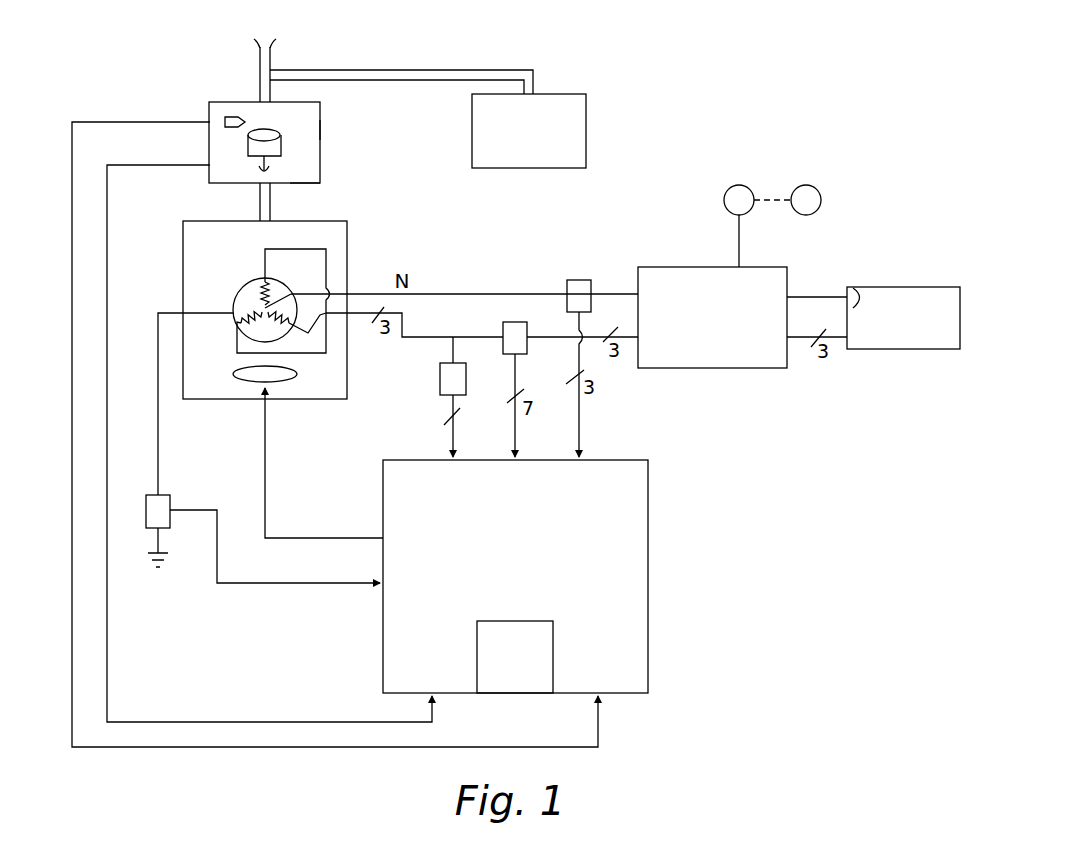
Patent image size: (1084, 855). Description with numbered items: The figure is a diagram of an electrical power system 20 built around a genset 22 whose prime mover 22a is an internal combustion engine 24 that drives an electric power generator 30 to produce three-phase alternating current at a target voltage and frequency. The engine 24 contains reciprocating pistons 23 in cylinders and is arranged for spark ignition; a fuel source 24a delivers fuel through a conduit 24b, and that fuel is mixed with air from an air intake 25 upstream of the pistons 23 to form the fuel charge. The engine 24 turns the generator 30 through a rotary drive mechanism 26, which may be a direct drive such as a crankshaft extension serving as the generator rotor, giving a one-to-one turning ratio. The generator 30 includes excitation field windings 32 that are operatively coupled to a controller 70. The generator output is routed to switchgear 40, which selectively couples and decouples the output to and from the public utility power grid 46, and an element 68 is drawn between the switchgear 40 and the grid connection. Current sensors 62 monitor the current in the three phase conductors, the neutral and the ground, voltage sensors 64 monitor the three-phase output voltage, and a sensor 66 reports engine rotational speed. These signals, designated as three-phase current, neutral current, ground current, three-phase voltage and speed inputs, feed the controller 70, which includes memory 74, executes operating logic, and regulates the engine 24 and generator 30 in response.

The electrical power system 20 is at (87, 98).
The genset 22 is at (334, 108).
The prime mover 22a is at (322, 128).
The pistons 23 is at (284, 143).
The internal combustion engine 24 is at (304, 186).
The fuel source 24a is at (514, 160).
The conduit 24b is at (440, 68).
The air intake 25 is at (266, 44).
The rotary drive mechanism 26 is at (258, 198).
The electric power generator 30 is at (183, 271).
The excitation field windings 32 is at (283, 381).
The switchgear 40 is at (672, 265).
The public utility power grid 46 is at (903, 286).
The current sensors 62 is at (166, 494).
The voltage sensors 64 is at (440, 380).
The sensor 66 is at (228, 116).
The transfer switch 68 is at (738, 185).
The controller 70 is at (519, 611).
The memory 74 is at (504, 668).